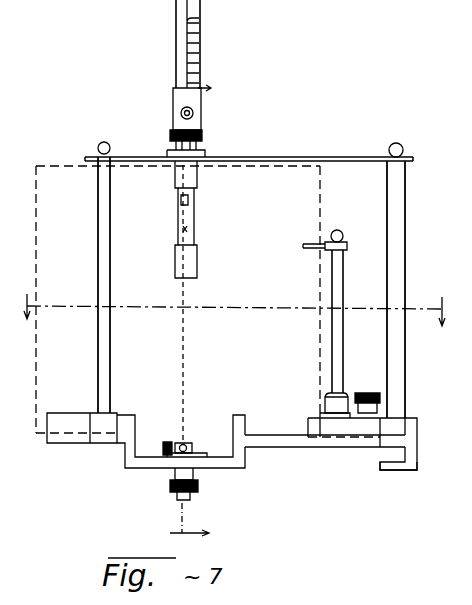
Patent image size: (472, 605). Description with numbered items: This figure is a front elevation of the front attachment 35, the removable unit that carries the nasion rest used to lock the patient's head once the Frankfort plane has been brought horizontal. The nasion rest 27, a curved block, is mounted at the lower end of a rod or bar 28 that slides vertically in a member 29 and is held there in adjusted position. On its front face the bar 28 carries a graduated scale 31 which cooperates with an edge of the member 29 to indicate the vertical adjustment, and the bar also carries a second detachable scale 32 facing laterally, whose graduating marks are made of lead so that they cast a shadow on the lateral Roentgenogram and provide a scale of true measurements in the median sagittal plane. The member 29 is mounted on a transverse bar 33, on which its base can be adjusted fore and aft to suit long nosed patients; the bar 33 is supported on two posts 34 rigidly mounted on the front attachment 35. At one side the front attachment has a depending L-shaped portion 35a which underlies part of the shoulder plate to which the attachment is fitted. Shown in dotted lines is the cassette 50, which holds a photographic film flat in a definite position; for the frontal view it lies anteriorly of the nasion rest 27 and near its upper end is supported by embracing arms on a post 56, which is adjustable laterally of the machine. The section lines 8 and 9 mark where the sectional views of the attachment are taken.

The section line 8— 8 is at (197, 313).
The section line 9— 9 is at (231, 323).
The nasion rest 27 is at (190, 262).
The rod or bar 28 is at (181, 66).
The member 29 is at (194, 112).
The graduated scale 31 is at (205, 61).
The second detachable scale 32 is at (190, 341).
The transverse bar 33 is at (350, 157).
The posts 34 is at (105, 252).
The front attachment 35 is at (266, 447).
The depending L-shaped portion 35a is at (417, 462).
The cassette 50 is at (284, 164).
The post 56 is at (344, 291).